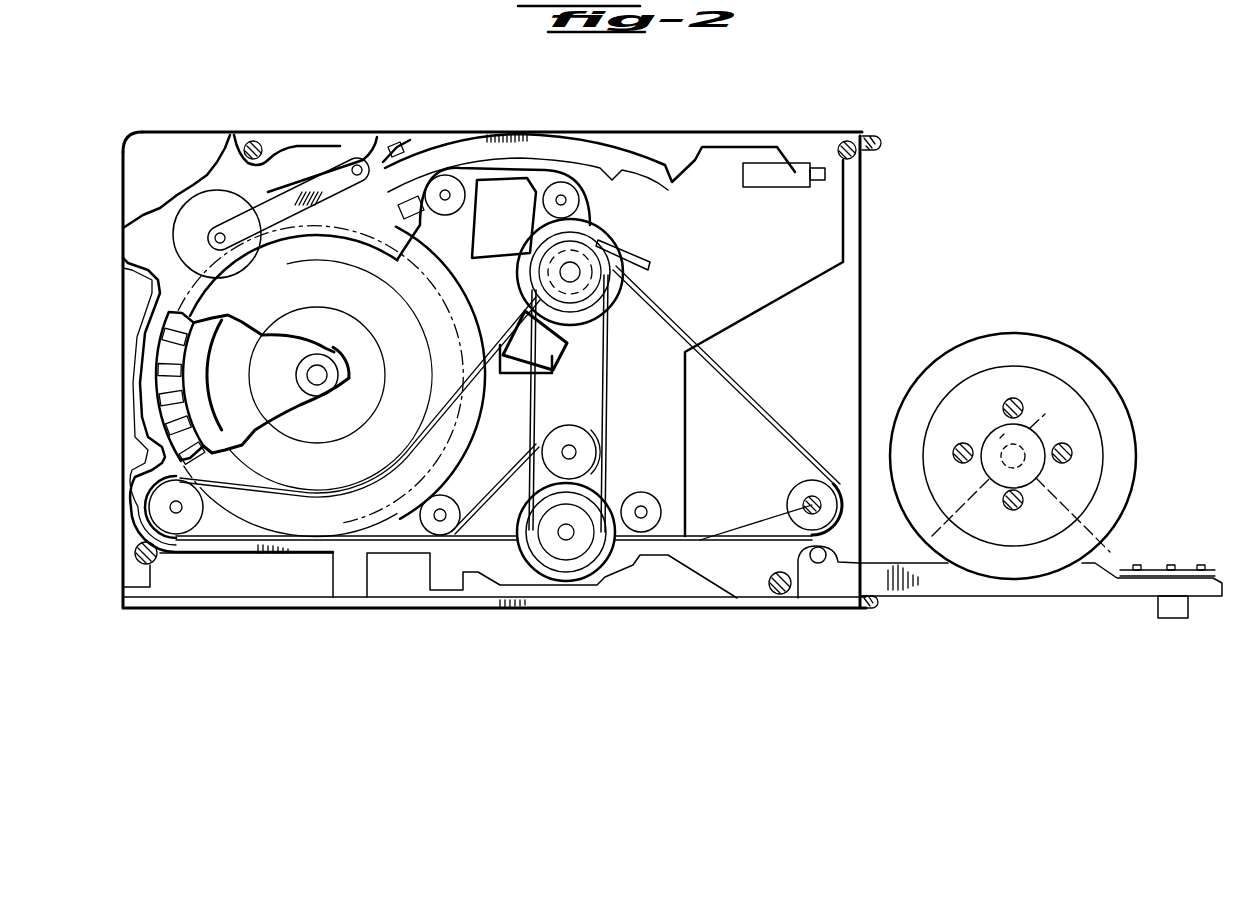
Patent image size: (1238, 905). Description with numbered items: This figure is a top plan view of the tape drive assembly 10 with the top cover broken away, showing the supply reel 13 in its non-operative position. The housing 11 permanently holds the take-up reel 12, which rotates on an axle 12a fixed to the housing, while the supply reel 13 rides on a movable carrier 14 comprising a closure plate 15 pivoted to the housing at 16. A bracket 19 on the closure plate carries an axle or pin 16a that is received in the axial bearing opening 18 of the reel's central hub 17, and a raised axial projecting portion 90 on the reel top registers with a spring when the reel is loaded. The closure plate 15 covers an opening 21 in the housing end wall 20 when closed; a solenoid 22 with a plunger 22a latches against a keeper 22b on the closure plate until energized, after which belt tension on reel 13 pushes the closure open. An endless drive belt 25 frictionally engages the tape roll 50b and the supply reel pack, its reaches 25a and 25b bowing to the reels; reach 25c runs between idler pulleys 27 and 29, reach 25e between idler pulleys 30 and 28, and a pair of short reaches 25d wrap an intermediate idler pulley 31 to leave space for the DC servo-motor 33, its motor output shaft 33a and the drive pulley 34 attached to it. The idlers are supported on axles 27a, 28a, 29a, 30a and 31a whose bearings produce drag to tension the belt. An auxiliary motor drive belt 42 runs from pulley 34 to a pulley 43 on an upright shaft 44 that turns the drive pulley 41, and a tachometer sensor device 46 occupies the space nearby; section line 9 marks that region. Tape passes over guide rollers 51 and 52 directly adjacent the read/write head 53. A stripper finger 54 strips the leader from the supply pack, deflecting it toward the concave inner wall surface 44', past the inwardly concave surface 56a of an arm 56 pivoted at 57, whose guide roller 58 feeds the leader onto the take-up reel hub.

The section line 9 is at (646, 283).
The tape drive assembly 10 is at (984, 128).
The housing 11 is at (752, 130).
The take-up reel 12 is at (232, 390).
The axle 12a is at (320, 368).
The supply reel 13 is at (1010, 332).
The movable carrier 14 is at (978, 602).
The closure plate 15 is at (1078, 596).
The pivot 16 is at (818, 563).
The axle or pin 16a is at (1025, 432).
The central hub 17 is at (986, 519).
The axial bearing opening 18 is at (1069, 483).
The bracket 19 is at (1110, 525).
The housing end wall 20 is at (880, 143).
The opening 21 is at (862, 228).
The solenoid 22 is at (750, 188).
The plunger 22a is at (818, 185).
The keeper 22b is at (1165, 570).
The endless drive belt 25 is at (732, 376).
The belt reach 25a is at (750, 400).
The belt reach 25b is at (368, 500).
The belt reach 25c is at (755, 542).
The short belt reaches 25d is at (622, 470).
The belt reach 25e is at (250, 553).
The idler pulley 27 is at (818, 482).
The axle 27a is at (806, 502).
The idler pulley 28 is at (172, 507).
The axle 28a is at (150, 518).
The idler pulley 29 is at (652, 500).
The axle 29a is at (660, 508).
The idler pulley 30 is at (448, 508).
The axle 30a is at (425, 545).
The intermediate idler pulley 31 is at (570, 448).
The axle 31a is at (582, 415).
The DC servo-motor 33 is at (540, 568).
The motor output shaft 33a is at (565, 540).
The drive pulley 34 is at (592, 572).
The drive pulley 41 is at (556, 328).
The auxiliary motor drive belt 42 is at (608, 392).
The pulley 43 is at (598, 255).
The upright shaft 44 is at (543, 272).
The concave inner wall surface 44' is at (635, 135).
The tachometer sensor device 46 is at (652, 257).
The tape roll 50b is at (400, 294).
The tape guide roller 51 is at (560, 196).
The tape guide roller 52 is at (447, 183).
The read/write head 53 is at (510, 212).
The stripper finger 54 is at (598, 230).
The arm 56 is at (303, 185).
The inwardly concave surface 56a is at (335, 210).
The pivot 57 is at (358, 162).
The guide roller 58 is at (212, 205).
The raised axial projecting portion 90 is at (1000, 437).